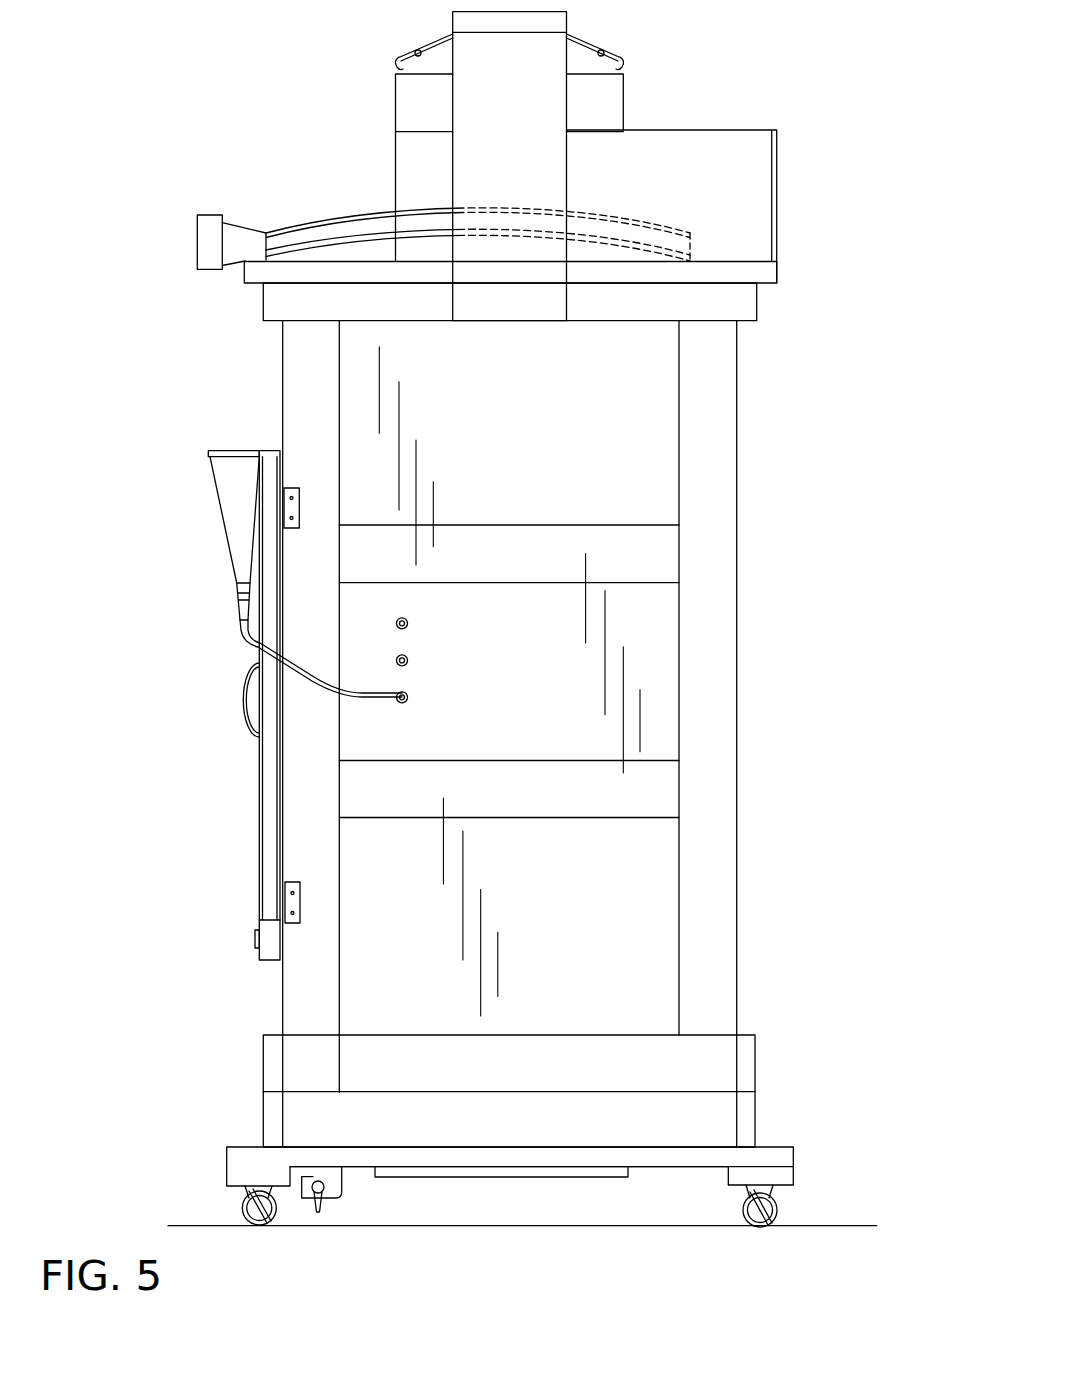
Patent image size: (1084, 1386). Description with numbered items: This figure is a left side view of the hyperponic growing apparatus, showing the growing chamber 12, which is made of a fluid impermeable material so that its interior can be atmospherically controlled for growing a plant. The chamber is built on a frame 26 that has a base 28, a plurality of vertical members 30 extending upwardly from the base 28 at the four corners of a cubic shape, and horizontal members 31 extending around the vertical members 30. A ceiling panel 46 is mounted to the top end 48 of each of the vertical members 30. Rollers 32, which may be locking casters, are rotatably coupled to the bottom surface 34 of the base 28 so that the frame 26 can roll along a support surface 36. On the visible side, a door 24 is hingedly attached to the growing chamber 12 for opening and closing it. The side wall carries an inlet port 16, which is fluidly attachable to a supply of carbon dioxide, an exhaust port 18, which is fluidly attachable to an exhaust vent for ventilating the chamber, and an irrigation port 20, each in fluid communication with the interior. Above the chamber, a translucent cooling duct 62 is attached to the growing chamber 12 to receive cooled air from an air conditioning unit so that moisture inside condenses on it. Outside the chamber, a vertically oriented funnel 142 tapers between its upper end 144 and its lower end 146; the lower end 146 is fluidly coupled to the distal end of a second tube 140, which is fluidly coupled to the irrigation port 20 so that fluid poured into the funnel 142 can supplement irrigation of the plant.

The growing chamber 12 is at (812, 499).
The inlet port 16 is at (402, 623).
The exhaust port 18 is at (398, 664).
The irrigation port 20 is at (403, 705).
The door 24 is at (258, 857).
The frame 26 is at (760, 876).
The base 28 is at (777, 1147).
The vertical members 30 is at (282, 371).
The horizontal members 31 is at (640, 525).
The rollers 32 is at (240, 1207).
The bottom surface 34 is at (358, 1167).
The support surface 36 is at (852, 1226).
The ceiling panel 46 is at (722, 262).
The top end 48 is at (308, 321).
The cooling duct 62 is at (355, 213).
The second tube 140 is at (278, 698).
The funnel 142 is at (217, 495).
The upper end 144 is at (228, 450).
The lower end 146 is at (240, 620).